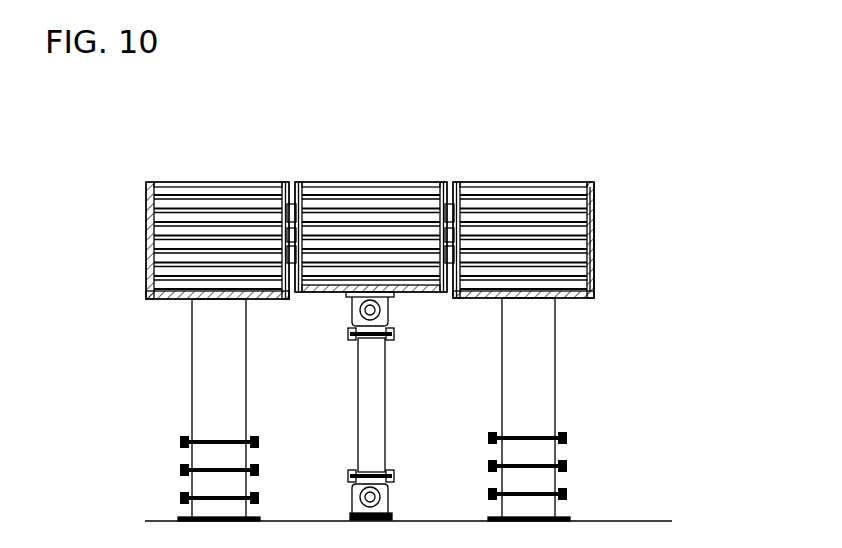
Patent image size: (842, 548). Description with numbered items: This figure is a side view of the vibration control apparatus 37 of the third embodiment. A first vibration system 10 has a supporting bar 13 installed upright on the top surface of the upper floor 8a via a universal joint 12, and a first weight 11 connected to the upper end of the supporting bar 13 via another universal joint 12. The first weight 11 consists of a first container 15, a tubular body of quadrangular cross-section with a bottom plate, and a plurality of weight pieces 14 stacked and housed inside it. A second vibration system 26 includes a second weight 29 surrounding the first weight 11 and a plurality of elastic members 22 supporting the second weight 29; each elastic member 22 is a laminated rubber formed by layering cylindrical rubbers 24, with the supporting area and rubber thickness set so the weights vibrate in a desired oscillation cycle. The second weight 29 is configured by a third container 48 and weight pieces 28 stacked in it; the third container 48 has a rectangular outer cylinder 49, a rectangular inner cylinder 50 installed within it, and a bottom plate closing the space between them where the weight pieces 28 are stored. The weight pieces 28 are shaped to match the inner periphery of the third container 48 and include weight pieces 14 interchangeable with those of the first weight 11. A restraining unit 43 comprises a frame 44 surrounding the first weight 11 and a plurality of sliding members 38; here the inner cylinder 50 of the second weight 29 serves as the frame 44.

The first vibration system 10 is at (347, 168).
The first weight 11 is at (400, 183).
The universal joint 12 is at (392, 308).
The supporting bar 13 is at (383, 405).
The weight pieces 14 is at (310, 184).
The first container 15 is at (440, 183).
The elastic members 22 is at (127, 490).
The rubbers 24 is at (195, 483).
The second vibration system 26 is at (606, 213).
The weight pieces 28 is at (571, 178).
The second weight 29 is at (528, 183).
The vibration control apparatus 37 is at (555, 133).
The sliding members 38 is at (290, 180).
The restraining unit 43 is at (309, 104).
The frame 44 is at (255, 180).
The third container 48 is at (600, 168).
The outer cylinder 49 is at (598, 193).
The inner cylinder 50 is at (455, 183).
The upper floor 8a is at (620, 520).